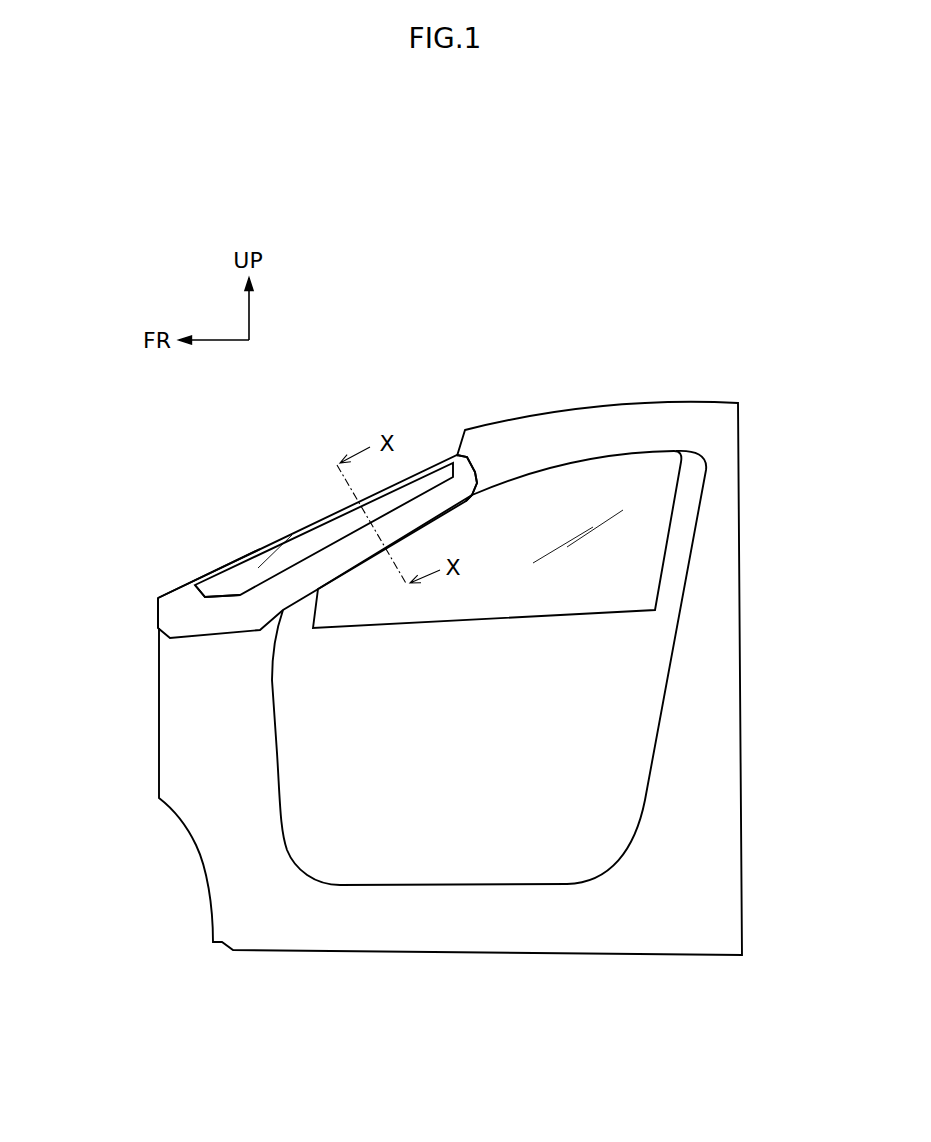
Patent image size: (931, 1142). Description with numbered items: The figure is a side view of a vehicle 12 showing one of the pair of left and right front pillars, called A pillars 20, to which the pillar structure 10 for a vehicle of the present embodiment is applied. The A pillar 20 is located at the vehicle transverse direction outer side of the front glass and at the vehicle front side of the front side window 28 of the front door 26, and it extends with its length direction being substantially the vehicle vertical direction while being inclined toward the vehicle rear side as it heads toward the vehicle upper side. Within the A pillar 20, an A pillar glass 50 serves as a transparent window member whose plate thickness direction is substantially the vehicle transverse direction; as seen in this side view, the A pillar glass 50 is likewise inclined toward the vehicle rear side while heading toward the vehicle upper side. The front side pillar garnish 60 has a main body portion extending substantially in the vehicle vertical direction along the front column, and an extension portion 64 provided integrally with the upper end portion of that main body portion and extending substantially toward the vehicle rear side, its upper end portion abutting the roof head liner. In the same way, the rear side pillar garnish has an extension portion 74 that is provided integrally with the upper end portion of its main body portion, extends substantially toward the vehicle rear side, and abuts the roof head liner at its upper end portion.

The pillar structure 10 is at (234, 530).
The vehicle 12 is at (665, 373).
The A pillar 20 is at (288, 521).
The front door 26 is at (653, 672).
The front side window 28 is at (585, 485).
The A pillar glass 50 is at (320, 527).
The front side pillar garnish 60 is at (203, 572).
The extension portion 64 is at (455, 455).
The extension portion 74 is at (462, 488).